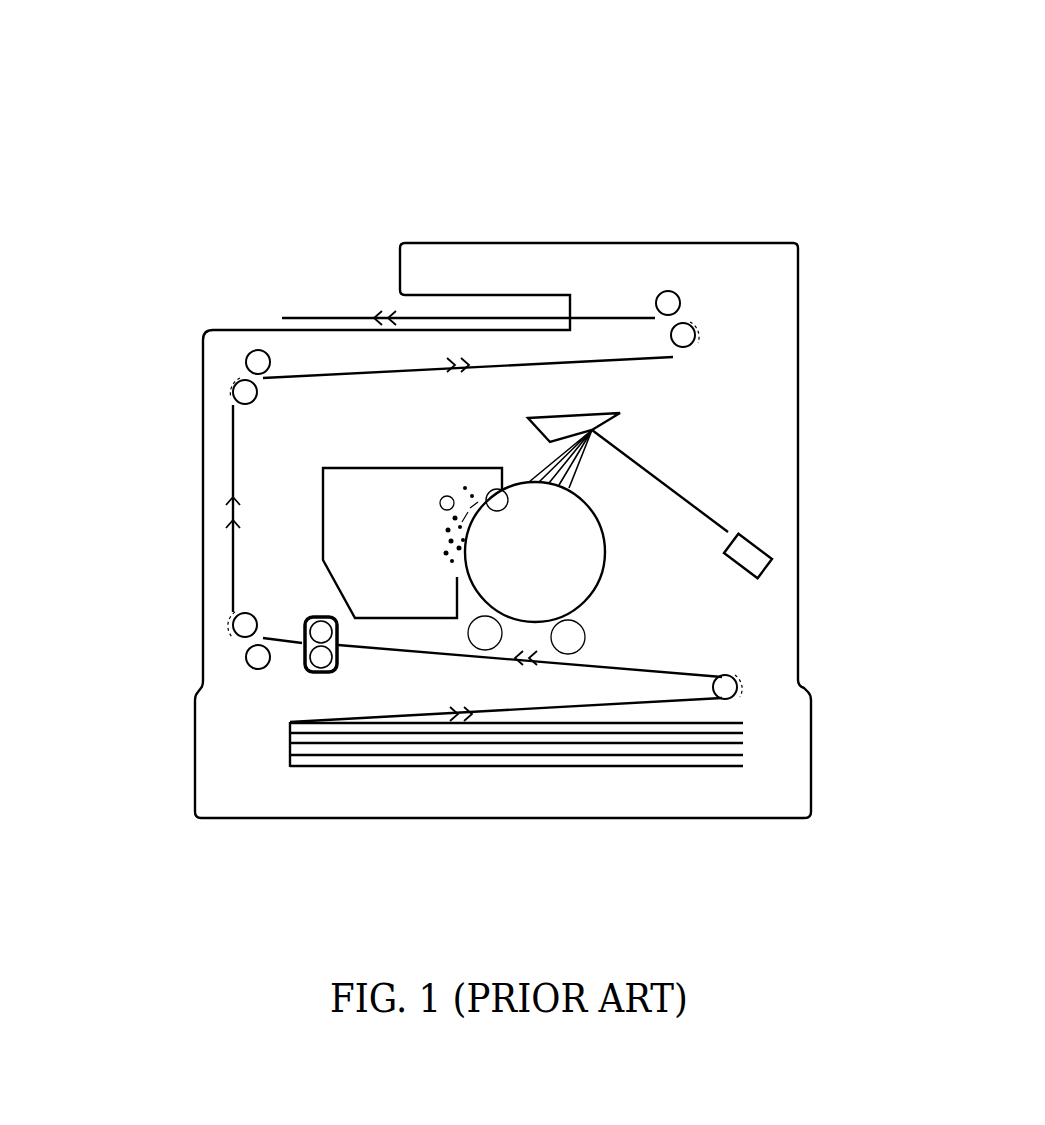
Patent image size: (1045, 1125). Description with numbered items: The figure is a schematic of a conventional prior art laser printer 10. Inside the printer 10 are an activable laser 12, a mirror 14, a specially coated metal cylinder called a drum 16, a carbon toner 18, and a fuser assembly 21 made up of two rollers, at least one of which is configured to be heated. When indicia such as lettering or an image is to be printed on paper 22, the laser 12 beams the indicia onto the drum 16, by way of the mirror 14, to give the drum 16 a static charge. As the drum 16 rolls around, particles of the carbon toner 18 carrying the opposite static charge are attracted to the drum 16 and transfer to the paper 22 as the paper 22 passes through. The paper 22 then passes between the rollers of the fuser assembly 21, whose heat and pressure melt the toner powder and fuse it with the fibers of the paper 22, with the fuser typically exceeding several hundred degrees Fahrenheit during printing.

The laser printer 10 is at (622, 134).
The laser 12 is at (762, 535).
The mirror 14 is at (612, 415).
The drum 16 is at (589, 597).
The carbon toner 18 is at (322, 525).
The fuser assembly 21 is at (302, 652).
The paper 22 is at (398, 770).